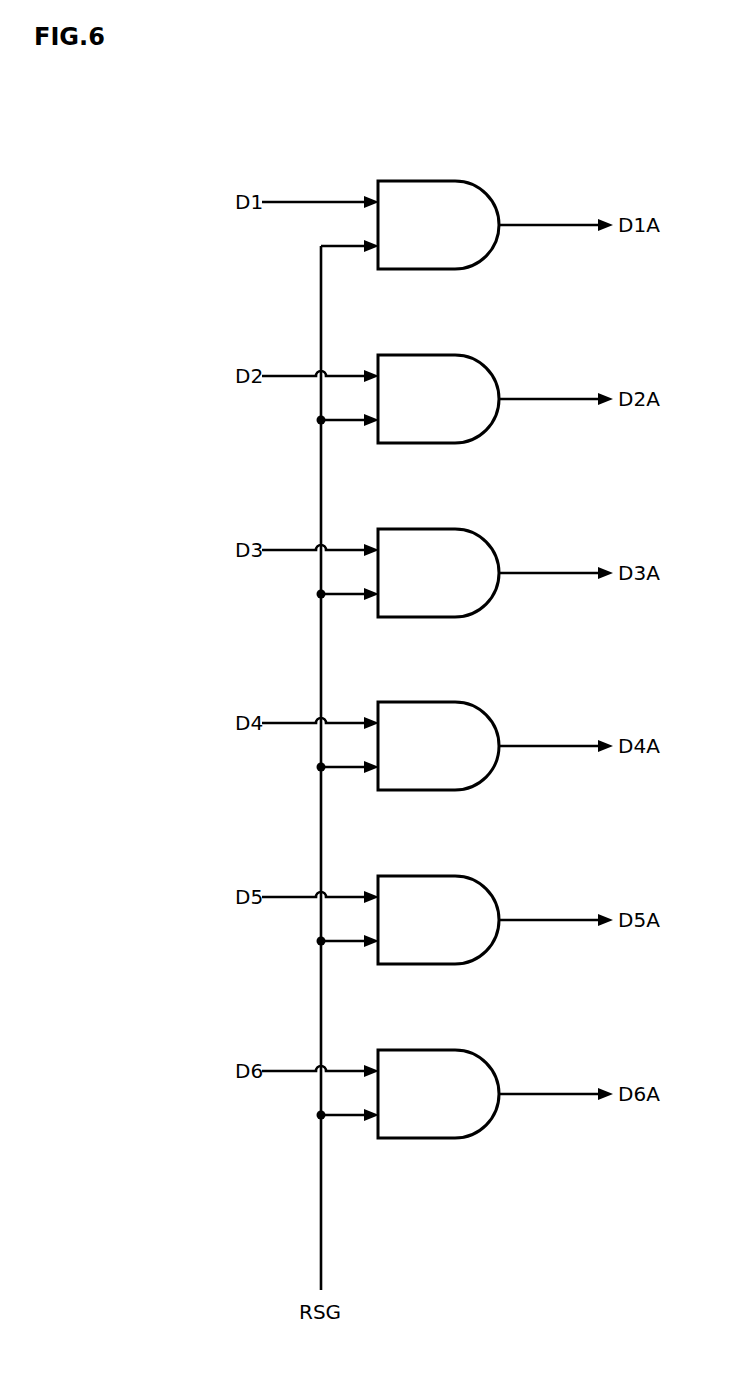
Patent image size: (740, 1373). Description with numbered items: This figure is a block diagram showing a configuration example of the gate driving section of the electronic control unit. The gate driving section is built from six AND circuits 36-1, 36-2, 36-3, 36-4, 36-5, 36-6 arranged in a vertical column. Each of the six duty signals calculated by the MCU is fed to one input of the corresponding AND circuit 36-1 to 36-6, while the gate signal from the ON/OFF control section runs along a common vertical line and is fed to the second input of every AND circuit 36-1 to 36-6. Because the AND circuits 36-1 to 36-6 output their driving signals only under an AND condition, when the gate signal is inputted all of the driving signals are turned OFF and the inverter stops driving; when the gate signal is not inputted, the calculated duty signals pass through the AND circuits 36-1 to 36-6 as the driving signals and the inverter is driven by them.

The AND circuit 36-1 is at (451, 181).
The AND circuit 36-2 is at (451, 355).
The AND circuit 36-3 is at (451, 529).
The AND circuit 36-4 is at (451, 702).
The AND circuit 36-5 is at (451, 876).
The AND circuit 36-6 is at (451, 1050).